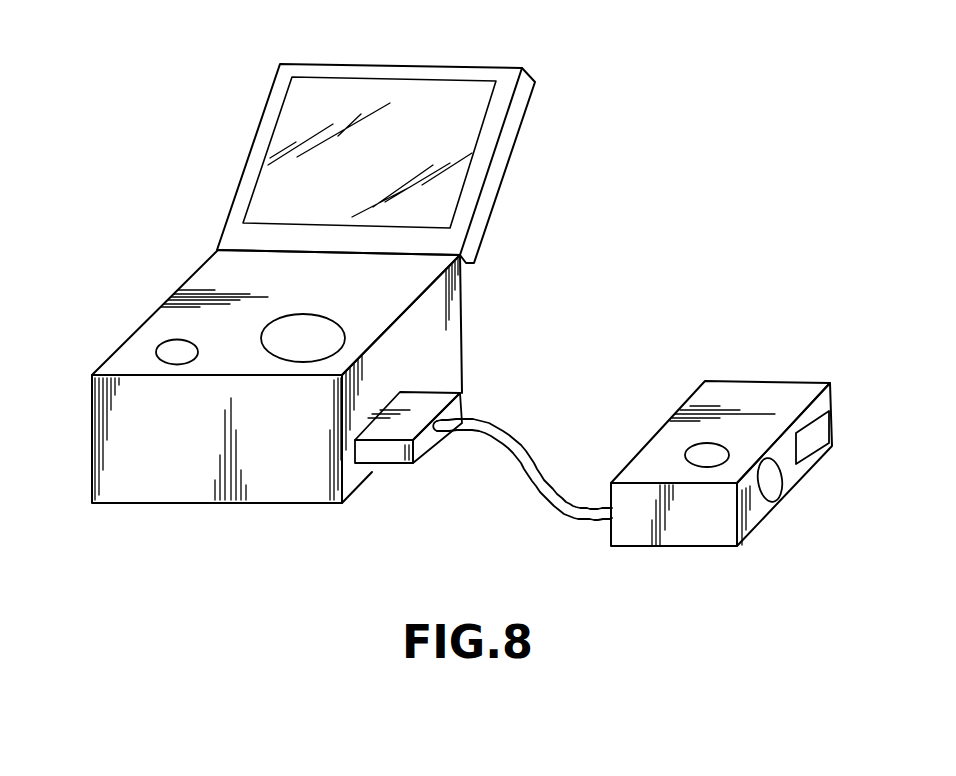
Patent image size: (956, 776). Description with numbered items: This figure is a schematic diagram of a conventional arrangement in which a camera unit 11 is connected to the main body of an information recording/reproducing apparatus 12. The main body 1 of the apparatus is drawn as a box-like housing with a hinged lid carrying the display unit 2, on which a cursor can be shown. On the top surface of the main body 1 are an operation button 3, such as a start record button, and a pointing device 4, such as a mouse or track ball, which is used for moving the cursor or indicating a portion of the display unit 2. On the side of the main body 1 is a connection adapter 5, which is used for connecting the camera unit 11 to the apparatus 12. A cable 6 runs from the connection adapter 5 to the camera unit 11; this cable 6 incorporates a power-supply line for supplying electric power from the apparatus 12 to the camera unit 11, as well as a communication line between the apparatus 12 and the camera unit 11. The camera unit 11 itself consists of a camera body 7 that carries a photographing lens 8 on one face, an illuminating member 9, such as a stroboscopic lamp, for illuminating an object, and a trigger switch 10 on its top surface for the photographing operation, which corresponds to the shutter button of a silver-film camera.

The main body 1 is at (186, 281).
The display unit 2 is at (300, 107).
The operation button 3 is at (168, 342).
The pointing device 4 is at (297, 362).
The connection adapter 5 is at (427, 400).
The cable 6 is at (471, 432).
The camera body 7 is at (737, 391).
The photographing lens 8 is at (773, 490).
The illuminating member 9 is at (813, 428).
The trigger switch 10 is at (688, 450).
The camera unit 11 is at (655, 566).
The information recording/reproducing apparatus 12 is at (160, 519).